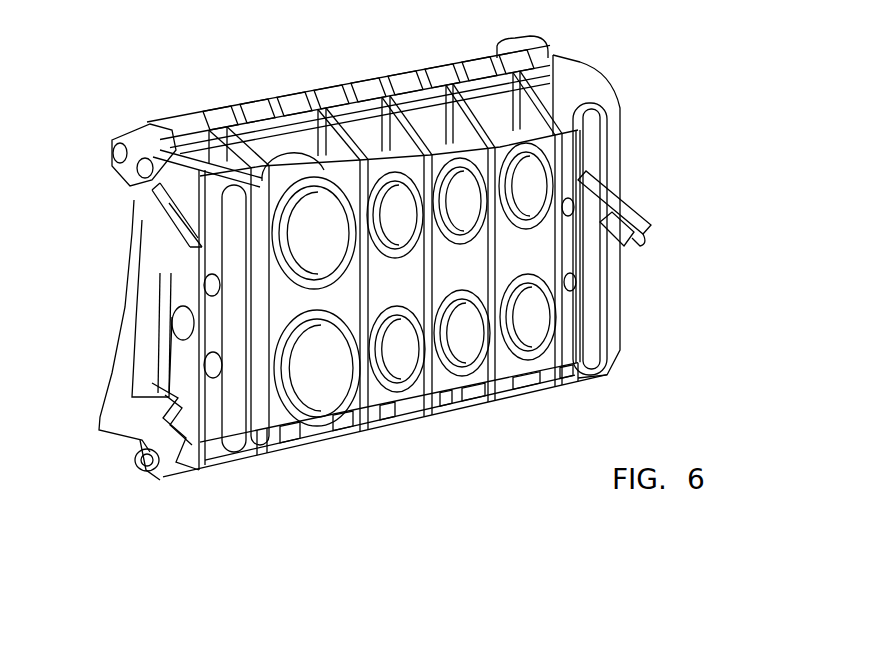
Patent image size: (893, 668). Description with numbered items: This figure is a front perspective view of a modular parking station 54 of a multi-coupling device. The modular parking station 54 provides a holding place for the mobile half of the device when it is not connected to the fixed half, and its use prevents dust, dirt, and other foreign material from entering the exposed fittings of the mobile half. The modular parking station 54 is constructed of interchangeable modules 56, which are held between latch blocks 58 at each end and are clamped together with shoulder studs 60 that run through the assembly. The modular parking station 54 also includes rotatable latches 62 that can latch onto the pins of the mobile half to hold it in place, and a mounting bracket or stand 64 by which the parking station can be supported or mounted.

The modular parking station 54 is at (582, 82).
The interchangeable modules 56 is at (402, 402).
The latch blocks 58 is at (613, 157).
The shoulder studs 60 is at (377, 102).
The rotatable latches 62 is at (640, 228).
The mounting bracket or stand 64 is at (132, 328).